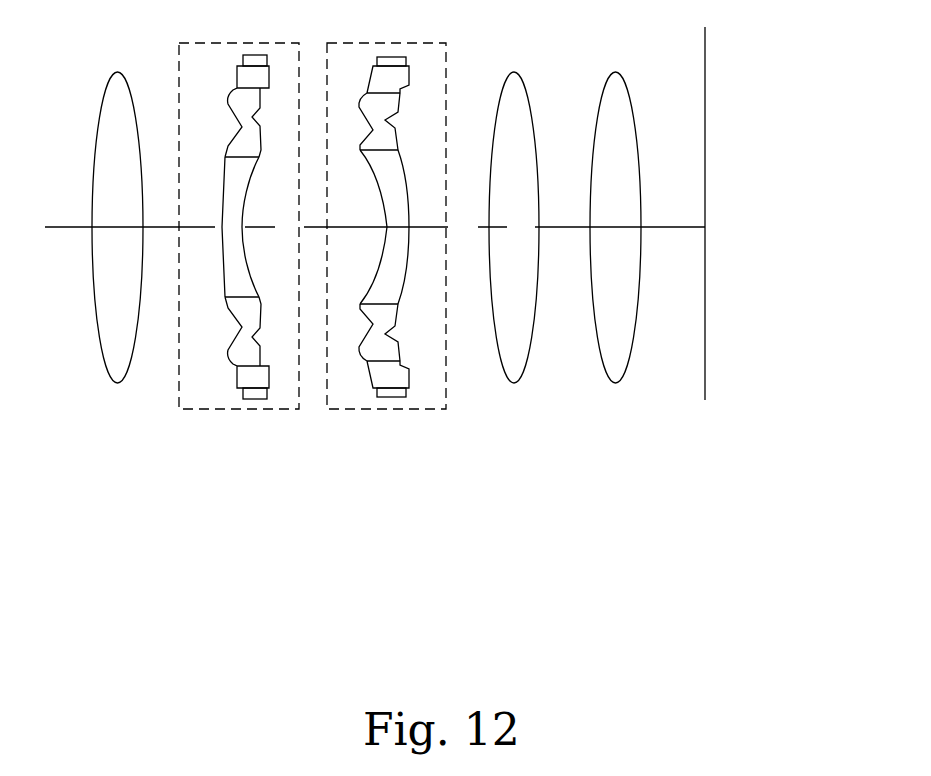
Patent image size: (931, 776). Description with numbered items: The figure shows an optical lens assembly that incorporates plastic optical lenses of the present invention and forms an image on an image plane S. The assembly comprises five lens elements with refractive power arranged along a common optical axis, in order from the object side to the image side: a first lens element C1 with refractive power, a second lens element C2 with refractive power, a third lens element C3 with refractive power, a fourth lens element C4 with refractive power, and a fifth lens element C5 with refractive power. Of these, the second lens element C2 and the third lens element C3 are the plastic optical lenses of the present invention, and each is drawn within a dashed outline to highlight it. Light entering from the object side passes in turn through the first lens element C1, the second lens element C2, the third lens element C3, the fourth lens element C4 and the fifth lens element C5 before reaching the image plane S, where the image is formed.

The first lens element C1 is at (120, 264).
The second lens element C2 is at (239, 250).
The third lens element C3 is at (386, 250).
The fourth lens element C4 is at (515, 264).
The fifth lens element C5 is at (617, 264).
The image plane S is at (820, 427).